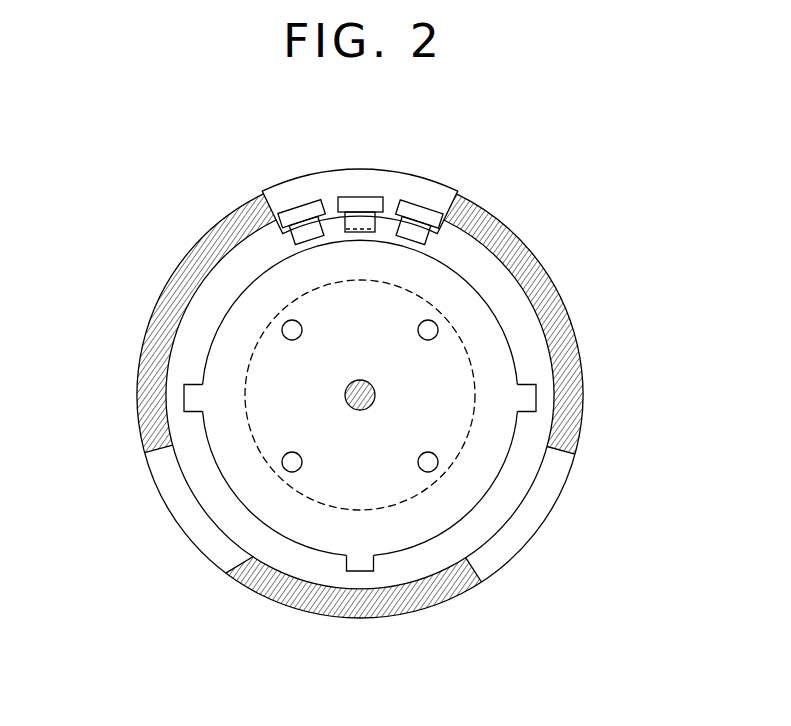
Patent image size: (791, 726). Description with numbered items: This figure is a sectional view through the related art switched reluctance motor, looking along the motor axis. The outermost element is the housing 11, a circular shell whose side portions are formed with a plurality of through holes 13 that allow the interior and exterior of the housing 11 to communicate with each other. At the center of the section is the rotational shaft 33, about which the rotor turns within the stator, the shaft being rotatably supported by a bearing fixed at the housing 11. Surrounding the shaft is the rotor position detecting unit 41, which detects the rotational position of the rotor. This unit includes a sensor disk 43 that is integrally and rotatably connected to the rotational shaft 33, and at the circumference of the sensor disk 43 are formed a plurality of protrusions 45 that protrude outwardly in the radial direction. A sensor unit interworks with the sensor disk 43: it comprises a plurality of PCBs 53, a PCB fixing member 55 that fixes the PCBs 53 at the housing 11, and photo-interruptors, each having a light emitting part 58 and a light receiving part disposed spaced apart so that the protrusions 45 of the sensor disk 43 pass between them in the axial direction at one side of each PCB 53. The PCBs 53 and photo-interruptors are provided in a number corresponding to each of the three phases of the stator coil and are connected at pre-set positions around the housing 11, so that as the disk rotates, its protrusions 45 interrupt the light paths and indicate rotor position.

The housing 11 is at (200, 263).
The through holes 13 is at (243, 566).
The rotational shaft 33 is at (372, 389).
The rotor position detecting unit 41 is at (217, 472).
The sensor disk 43 is at (455, 452).
The protrusions 45 is at (200, 397).
The PCBs 53 is at (411, 203).
The PCB fixing member 55 is at (433, 188).
The light emitting part 58 is at (313, 237).